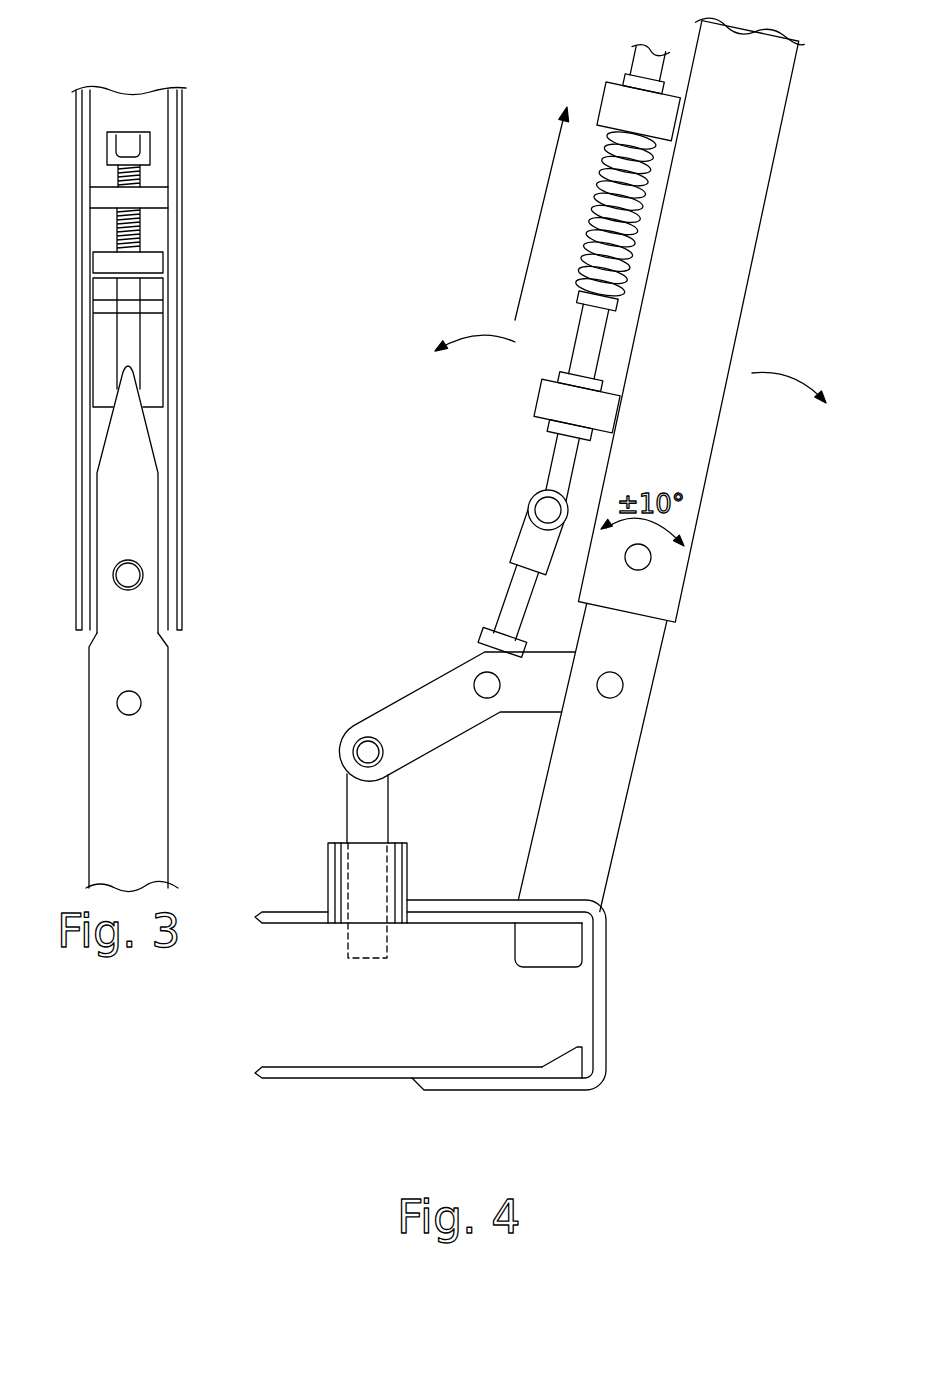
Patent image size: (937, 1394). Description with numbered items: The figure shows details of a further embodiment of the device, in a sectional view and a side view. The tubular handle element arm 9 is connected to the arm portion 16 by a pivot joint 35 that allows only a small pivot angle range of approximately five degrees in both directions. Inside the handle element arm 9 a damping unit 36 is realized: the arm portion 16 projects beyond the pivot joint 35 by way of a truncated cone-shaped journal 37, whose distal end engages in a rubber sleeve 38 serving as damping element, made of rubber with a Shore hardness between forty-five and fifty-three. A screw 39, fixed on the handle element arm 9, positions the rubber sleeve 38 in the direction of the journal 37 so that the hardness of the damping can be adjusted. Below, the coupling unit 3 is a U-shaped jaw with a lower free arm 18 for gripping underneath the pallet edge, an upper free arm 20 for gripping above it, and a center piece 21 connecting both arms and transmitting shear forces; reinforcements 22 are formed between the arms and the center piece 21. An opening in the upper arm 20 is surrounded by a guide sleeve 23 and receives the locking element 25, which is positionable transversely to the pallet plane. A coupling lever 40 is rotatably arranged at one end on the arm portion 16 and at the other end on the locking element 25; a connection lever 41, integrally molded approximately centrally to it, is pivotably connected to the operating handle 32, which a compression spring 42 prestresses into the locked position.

In FIG. 4, the coupling unit 3 is at (481, 1039).
In FIG. 3, the handle element arm 9 is at (175, 150).
In FIG. 4, the handle element arm 9 is at (745, 220).
In FIG. 3, the arm portion 16 is at (143, 747).
In FIG. 4, the arm portion 16 is at (612, 790).
In FIG. 4, the lower free arm 18 is at (320, 1067).
In FIG. 4, the upper free arm 20 is at (295, 913).
In FIG. 4, the center piece 21 is at (590, 1020).
In FIG. 4, the reinforcements 22 is at (542, 935).
In FIG. 4, the guide sleeve 23 is at (337, 862).
In FIG. 4, the locking element 25 is at (363, 808).
In FIG. 4, the operating handle 32 is at (555, 460).
In FIG. 3, the pivot joint 35 is at (145, 578).
In FIG. 4, the pivot joint 35 is at (642, 558).
In FIG. 3, the damping unit 36 is at (172, 139).
In FIG. 3, the truncated cone-shaped journal 37 is at (128, 480).
In FIG. 3, the rubber sleeve 38 is at (150, 318).
In FIG. 3, the screw 39 is at (142, 220).
In FIG. 4, the coupling lever 40 is at (413, 708).
In FIG. 4, the connection lever 41 is at (523, 582).
In FIG. 4, the compression spring 42 is at (597, 227).